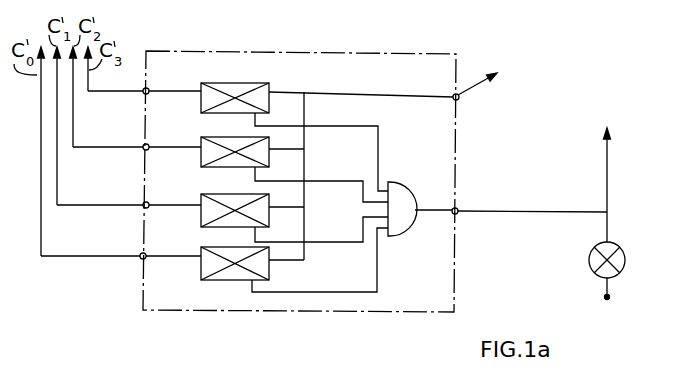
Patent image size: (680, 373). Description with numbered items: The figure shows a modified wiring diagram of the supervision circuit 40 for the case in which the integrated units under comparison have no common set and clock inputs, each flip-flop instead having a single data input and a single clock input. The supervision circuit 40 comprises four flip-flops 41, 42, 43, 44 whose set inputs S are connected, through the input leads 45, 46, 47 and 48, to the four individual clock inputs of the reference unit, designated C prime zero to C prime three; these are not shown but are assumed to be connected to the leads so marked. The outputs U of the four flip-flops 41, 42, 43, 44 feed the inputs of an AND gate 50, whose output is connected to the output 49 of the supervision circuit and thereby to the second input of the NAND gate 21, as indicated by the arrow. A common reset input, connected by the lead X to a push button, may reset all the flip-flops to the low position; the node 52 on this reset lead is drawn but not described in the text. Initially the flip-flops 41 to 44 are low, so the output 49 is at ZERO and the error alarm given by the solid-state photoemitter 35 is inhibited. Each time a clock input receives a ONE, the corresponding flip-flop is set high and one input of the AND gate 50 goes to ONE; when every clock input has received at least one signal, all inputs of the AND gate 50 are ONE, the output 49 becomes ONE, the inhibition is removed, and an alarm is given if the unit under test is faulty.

The NAND gate 21 is at (628, 169).
The solid-state photoemitter 35 is at (613, 258).
The supervision circuit 40 is at (446, 263).
The flip-flop 41 is at (201, 83).
The flip-flop 42 is at (201, 137).
The flip-flop 43 is at (201, 194).
The flip-flop 44 is at (201, 247).
The input lead 45 is at (144, 82).
The input lead 46 is at (137, 138).
The input lead 47 is at (129, 197).
The input lead 48 is at (121, 247).
The output 49 is at (511, 203).
The AND gate 50 is at (421, 181).
The output terminal X 52 is at (457, 100).